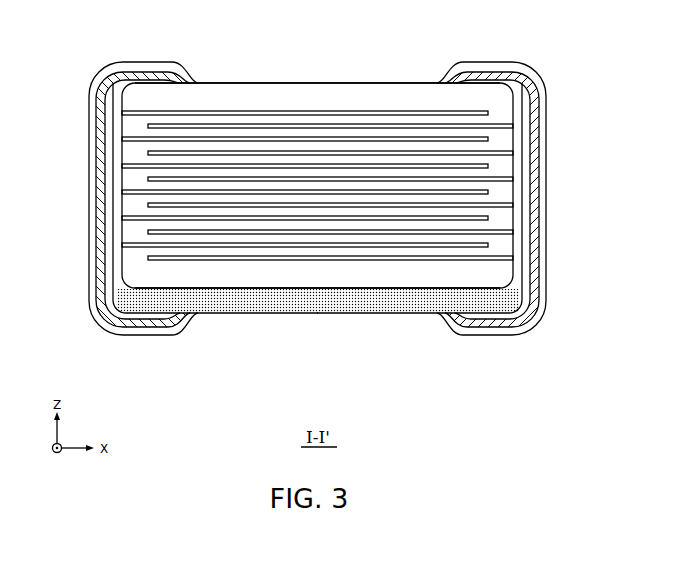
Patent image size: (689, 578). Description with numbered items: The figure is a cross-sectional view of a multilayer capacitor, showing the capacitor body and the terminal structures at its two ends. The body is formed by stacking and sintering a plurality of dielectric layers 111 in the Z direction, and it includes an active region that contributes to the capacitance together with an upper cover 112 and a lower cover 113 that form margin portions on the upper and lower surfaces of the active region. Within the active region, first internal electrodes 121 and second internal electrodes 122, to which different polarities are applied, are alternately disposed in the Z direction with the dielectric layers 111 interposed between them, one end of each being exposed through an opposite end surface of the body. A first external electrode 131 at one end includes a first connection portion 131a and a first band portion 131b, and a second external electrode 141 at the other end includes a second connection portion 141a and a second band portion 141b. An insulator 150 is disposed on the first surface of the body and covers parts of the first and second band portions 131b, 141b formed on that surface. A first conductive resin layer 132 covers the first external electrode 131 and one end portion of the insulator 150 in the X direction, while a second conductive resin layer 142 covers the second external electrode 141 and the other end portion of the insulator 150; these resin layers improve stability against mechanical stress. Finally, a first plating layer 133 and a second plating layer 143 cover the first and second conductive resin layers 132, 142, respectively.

The dielectric layer 111 is at (313, 118).
The upper cover 112 is at (377, 100).
The lower cover 113 is at (375, 273).
The first internal electrode 121 is at (233, 113).
The second internal electrode 122 is at (273, 126).
The first external electrode 131 is at (194, 201).
The first connection portion 131a is at (115, 227).
The first band portion 131b is at (140, 289).
The first conductive resin layer 132 is at (152, 72).
The first plating layer 133 is at (130, 62).
The second external electrode 141 is at (441, 201).
The second connection portion 141a is at (520, 227).
The second band portion 141b is at (495, 290).
The second conductive resin layer 142 is at (483, 70).
The second plating layer 143 is at (507, 62).
The insulator 150 is at (313, 298).